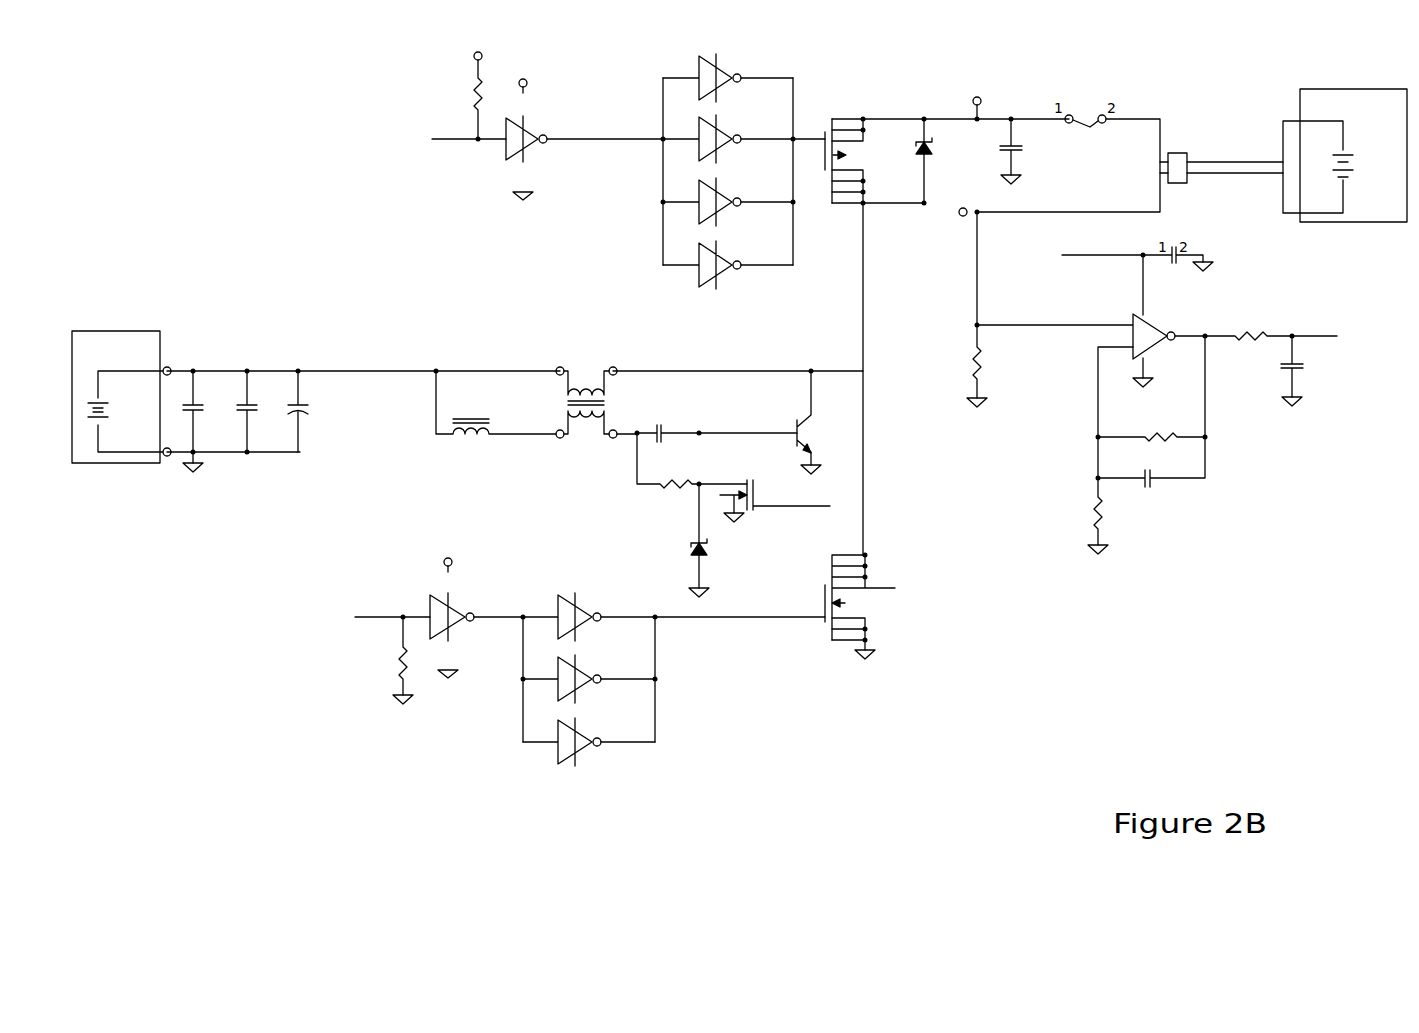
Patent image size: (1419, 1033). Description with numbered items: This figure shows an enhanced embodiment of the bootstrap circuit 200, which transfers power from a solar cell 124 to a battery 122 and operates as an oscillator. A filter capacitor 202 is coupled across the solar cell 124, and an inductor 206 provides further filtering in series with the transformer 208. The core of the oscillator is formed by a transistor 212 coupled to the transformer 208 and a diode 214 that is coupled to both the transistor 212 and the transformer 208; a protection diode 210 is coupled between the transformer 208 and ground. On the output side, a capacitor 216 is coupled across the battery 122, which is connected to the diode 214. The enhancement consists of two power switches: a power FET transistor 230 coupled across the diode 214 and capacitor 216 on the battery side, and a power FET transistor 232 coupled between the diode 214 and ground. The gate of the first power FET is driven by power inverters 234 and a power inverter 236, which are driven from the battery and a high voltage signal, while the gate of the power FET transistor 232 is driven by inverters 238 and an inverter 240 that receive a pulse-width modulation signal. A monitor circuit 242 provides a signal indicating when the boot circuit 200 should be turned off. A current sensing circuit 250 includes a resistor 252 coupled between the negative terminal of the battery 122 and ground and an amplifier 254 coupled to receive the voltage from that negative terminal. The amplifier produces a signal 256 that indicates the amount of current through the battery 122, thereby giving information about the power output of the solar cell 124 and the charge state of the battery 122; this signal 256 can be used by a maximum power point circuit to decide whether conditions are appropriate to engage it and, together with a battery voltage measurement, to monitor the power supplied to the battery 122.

The bootstrap circuit 200 is at (278, 112).
The battery 122 is at (1373, 207).
The solar cell 124 is at (95, 370).
The filter capacitor 202 is at (260, 398).
The inductor 206 is at (470, 437).
The transformer 208 is at (637, 415).
The protection diode 210 is at (705, 555).
The transistor 212 is at (812, 432).
The diode 214 is at (932, 147).
The capacitor 216 is at (1027, 148).
The power FET transistor 230 is at (848, 157).
The power FET transistor 232 is at (853, 603).
The power inverters 234 is at (680, 90).
The power inverter 236 is at (507, 160).
The inverters 238 is at (643, 702).
The inverter 240 is at (455, 620).
The monitor circuit 242 is at (720, 492).
The current sensing circuit 250 is at (1196, 444).
The resistor 252 is at (970, 362).
The amplifier 254 is at (1133, 312).
The signal 256 is at (1285, 333).